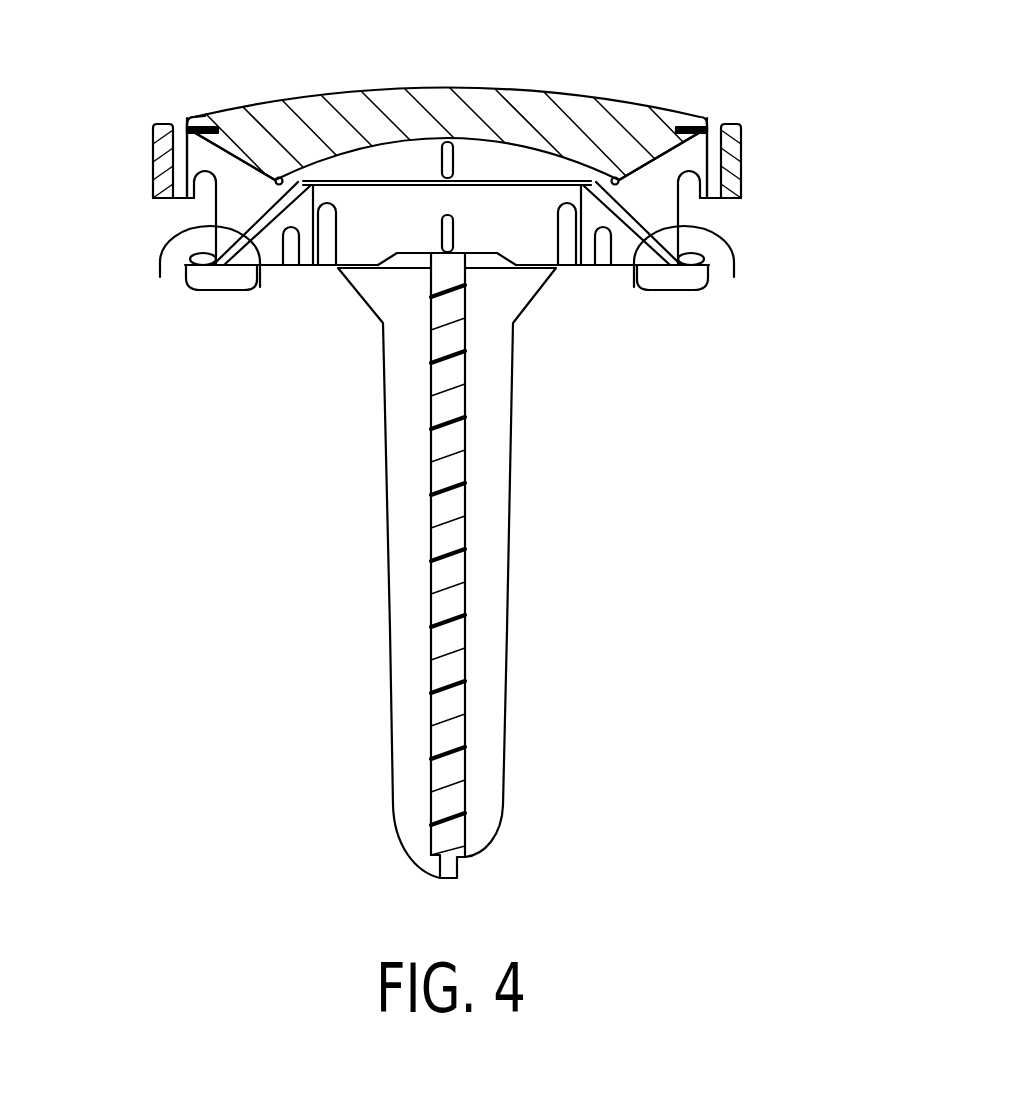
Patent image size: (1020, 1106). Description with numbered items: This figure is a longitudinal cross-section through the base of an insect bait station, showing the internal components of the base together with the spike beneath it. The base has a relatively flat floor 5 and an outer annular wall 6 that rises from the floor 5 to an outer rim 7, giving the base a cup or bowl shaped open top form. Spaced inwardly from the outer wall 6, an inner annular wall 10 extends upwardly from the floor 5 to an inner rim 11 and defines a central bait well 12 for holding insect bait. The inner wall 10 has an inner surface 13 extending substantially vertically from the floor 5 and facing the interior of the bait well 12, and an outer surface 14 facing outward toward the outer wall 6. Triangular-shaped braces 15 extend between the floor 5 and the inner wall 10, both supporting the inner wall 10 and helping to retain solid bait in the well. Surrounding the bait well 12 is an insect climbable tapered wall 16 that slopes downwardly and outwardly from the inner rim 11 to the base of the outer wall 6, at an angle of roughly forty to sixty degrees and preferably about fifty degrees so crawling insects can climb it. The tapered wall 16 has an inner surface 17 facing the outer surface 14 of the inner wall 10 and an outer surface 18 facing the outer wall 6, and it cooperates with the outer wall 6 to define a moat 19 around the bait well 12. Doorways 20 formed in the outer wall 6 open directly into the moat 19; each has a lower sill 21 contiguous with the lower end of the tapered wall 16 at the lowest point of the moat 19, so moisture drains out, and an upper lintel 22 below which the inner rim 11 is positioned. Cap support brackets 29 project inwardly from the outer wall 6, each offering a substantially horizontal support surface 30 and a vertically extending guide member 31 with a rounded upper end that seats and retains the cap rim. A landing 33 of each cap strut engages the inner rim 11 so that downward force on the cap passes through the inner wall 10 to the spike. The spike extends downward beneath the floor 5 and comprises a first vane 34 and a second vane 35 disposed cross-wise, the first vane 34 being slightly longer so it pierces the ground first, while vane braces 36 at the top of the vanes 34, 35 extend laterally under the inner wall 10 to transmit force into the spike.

The floor 5 is at (384, 332).
The outer annular wall 6 is at (157, 146).
The outer rim 7 is at (163, 124).
The inner annular wall 10 is at (318, 262).
The inner rim 11 is at (306, 178).
The central bait well 12 is at (477, 213).
The inner surface 13 is at (330, 196).
The outer surface 14 is at (305, 275).
The triangular-shaped braces 15 is at (440, 215).
The insect climbable tapered wall 16 is at (262, 200).
The inner surface 17 is at (262, 270).
The outer surface 18 is at (198, 258).
The moat 19 is at (232, 192).
The doorways 20 is at (142, 234).
The lower sill 21 is at (205, 272).
The upper lintel 22 is at (165, 200).
The cap support brackets 29 is at (180, 242).
The support surface 30 is at (172, 180).
The guide member 31 is at (187, 122).
The landing 33 is at (302, 178).
The first vane 34 is at (431, 745).
The second vane 35 is at (506, 636).
The vane braces 36 is at (512, 330).